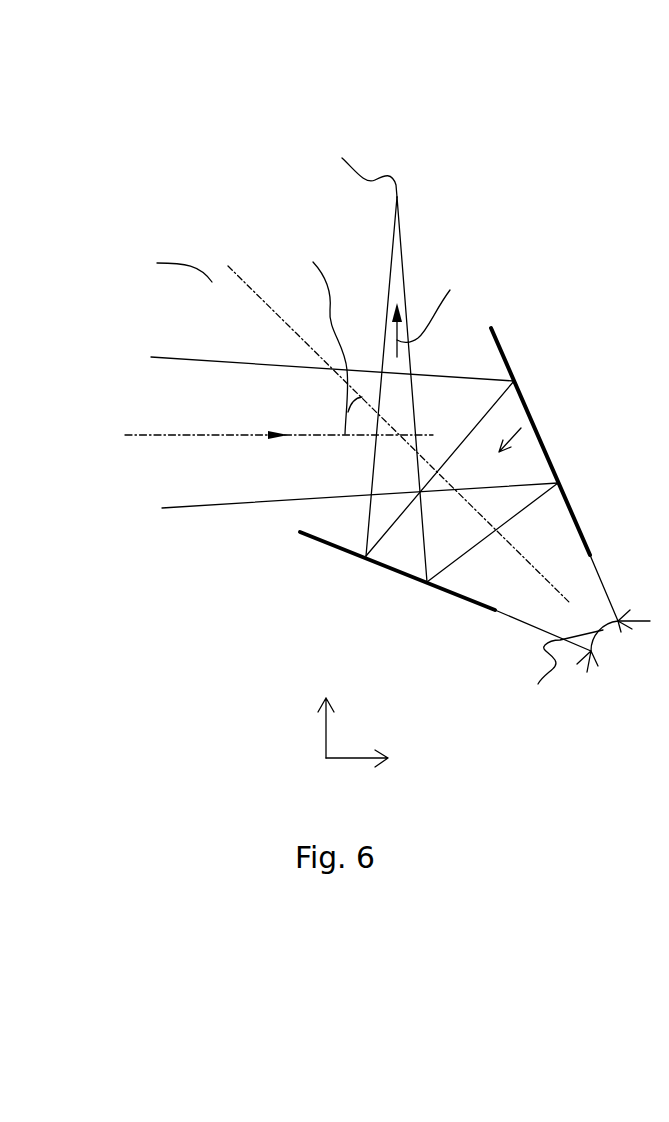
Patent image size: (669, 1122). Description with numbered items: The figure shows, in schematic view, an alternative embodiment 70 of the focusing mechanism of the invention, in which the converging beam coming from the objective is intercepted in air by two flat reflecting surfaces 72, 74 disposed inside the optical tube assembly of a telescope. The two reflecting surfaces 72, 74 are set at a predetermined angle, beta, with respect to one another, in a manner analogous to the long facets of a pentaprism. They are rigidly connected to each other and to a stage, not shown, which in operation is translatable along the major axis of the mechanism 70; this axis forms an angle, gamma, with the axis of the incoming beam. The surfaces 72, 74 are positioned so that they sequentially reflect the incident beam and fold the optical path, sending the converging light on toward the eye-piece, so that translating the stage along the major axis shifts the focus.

The alternative embodiment of the focusing mechanism 70 is at (175, 145).
The first reflecting surface 72 is at (504, 354).
The second reflecting surface 74 is at (342, 549).